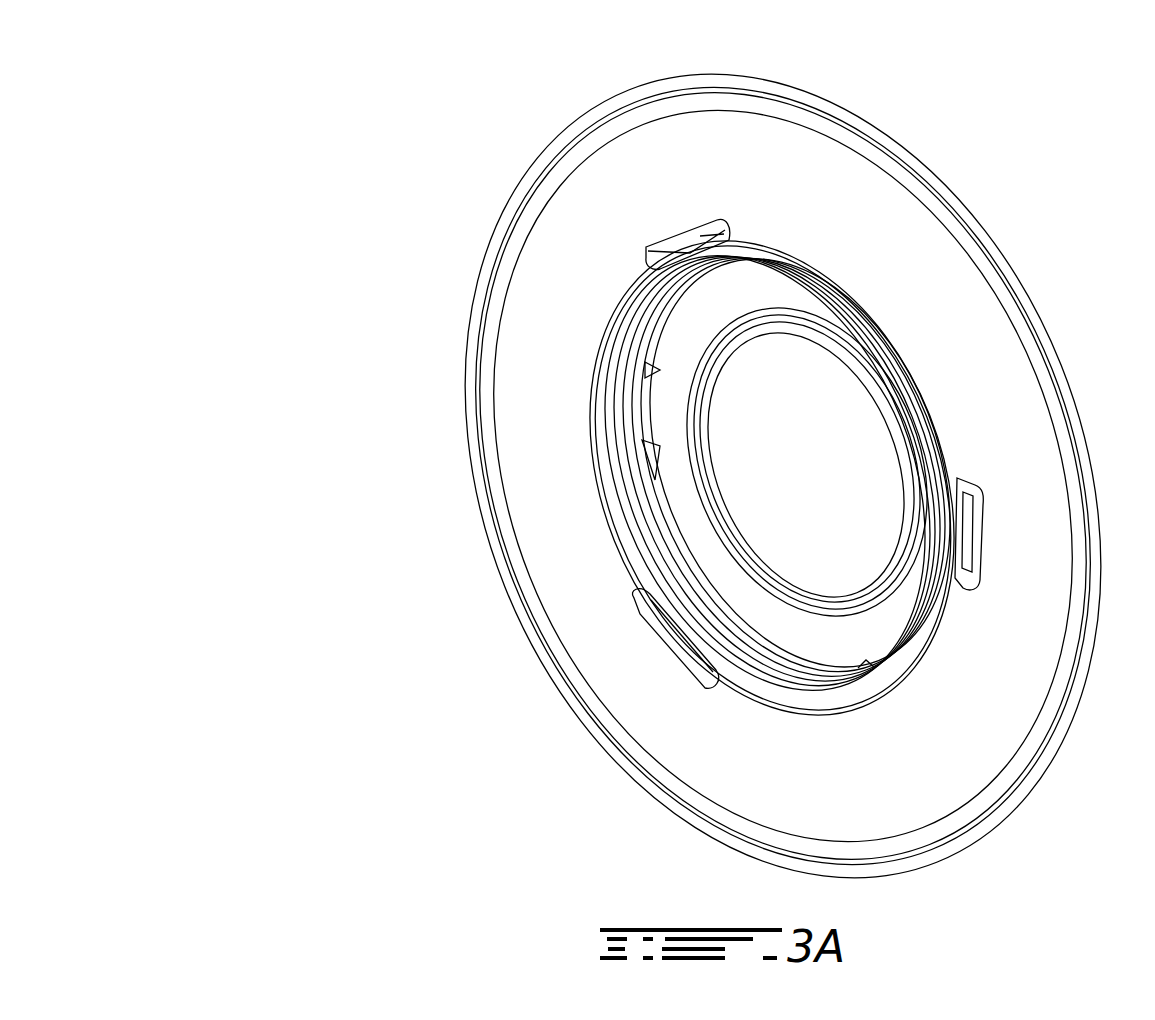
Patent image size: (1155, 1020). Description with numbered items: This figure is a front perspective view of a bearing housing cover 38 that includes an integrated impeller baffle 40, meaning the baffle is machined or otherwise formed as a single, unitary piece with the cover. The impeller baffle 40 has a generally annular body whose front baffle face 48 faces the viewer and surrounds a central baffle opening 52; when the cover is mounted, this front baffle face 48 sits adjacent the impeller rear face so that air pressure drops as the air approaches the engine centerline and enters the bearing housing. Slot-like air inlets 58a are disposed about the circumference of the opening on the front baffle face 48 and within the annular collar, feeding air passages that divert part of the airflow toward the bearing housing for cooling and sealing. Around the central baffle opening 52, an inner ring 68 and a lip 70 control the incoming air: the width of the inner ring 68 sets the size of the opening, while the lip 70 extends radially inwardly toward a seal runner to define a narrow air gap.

The bearing housing cover 38 is at (383, 261).
The impeller baffle 40 is at (628, 795).
The front baffle face 48 is at (546, 527).
The central baffle opening 52 is at (840, 453).
The air inlets 58a is at (688, 237).
The inner ring 68 is at (888, 627).
The lip 70 is at (905, 569).